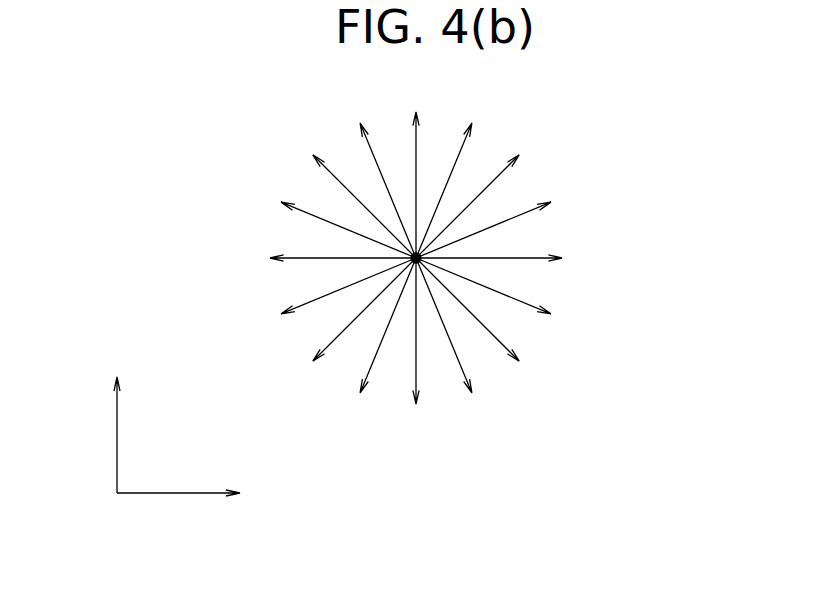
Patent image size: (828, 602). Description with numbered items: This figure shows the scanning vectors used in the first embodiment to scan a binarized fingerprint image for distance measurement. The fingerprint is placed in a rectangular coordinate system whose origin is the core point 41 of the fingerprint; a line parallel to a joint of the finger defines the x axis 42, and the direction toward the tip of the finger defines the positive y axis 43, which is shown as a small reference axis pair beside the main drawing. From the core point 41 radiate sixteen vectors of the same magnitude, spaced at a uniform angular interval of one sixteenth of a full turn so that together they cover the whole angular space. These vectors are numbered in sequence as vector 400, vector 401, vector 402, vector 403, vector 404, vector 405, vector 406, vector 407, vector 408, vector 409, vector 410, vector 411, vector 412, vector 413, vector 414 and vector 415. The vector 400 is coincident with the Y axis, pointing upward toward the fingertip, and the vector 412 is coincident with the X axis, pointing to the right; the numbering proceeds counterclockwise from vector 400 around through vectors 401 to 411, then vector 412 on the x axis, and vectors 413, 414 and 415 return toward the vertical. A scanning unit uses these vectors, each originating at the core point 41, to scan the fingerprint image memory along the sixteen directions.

The core point 41 is at (431, 247).
The x axis 42 is at (203, 495).
The y axis 43 is at (117, 472).
The scanning vector 400 is at (420, 140).
The scanning vector 401 is at (370, 147).
The scanning vector 402 is at (334, 173).
The scanning vector 403 is at (318, 213).
The scanning vector 404 is at (307, 257).
The scanning vector 405 is at (315, 300).
The scanning vector 406 is at (336, 339).
The scanning vector 407 is at (372, 358).
The scanning vector 408 is at (420, 375).
The scanning vector 409 is at (461, 363).
The scanning vector 410 is at (499, 339).
The scanning vector 411 is at (526, 303).
The scanning vector 412 is at (533, 256).
The scanning vector 413 is at (520, 212).
The scanning vector 414 is at (494, 180).
The scanning vector 415 is at (463, 162).